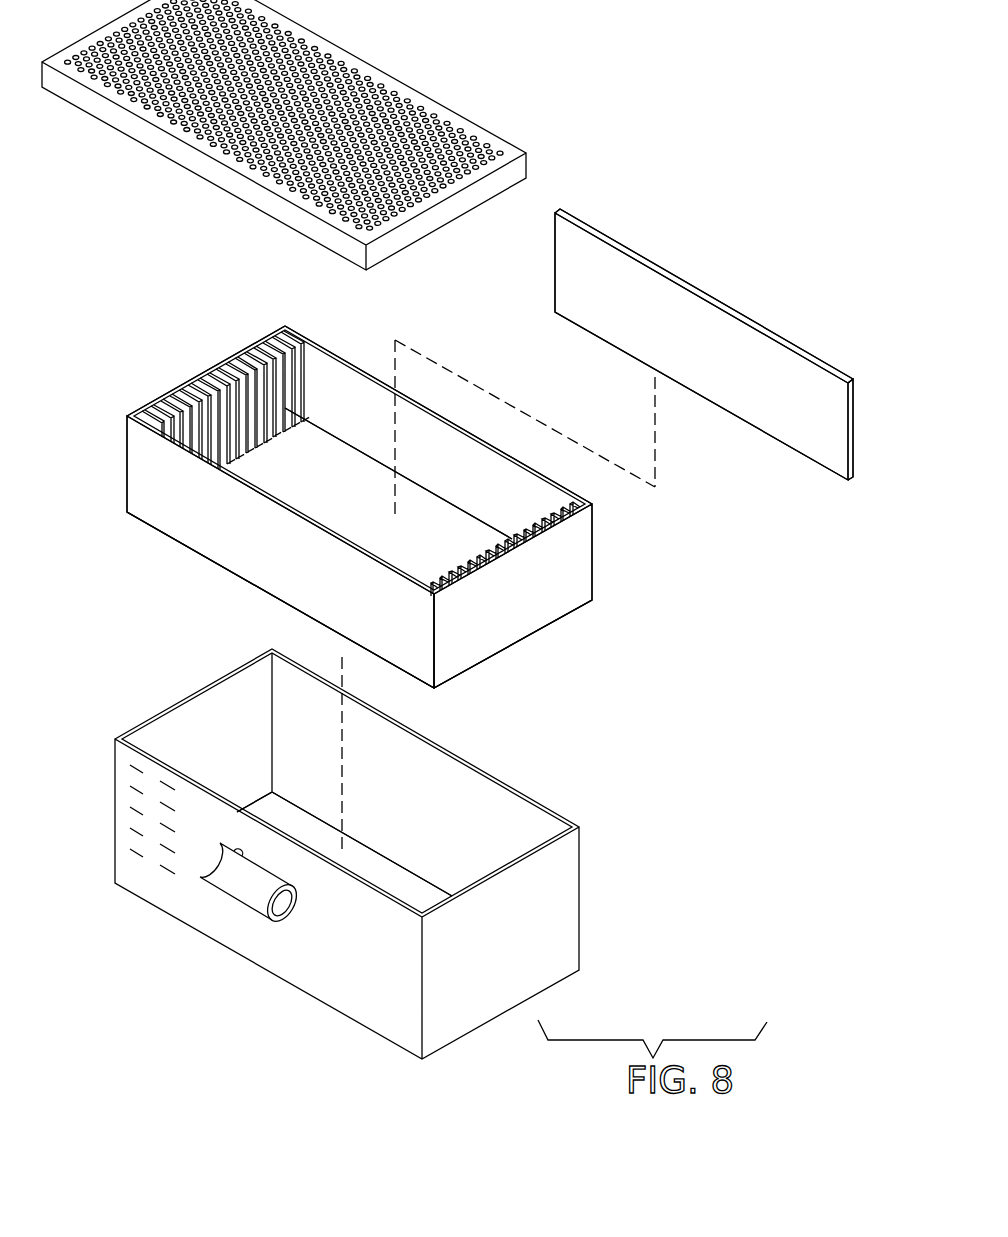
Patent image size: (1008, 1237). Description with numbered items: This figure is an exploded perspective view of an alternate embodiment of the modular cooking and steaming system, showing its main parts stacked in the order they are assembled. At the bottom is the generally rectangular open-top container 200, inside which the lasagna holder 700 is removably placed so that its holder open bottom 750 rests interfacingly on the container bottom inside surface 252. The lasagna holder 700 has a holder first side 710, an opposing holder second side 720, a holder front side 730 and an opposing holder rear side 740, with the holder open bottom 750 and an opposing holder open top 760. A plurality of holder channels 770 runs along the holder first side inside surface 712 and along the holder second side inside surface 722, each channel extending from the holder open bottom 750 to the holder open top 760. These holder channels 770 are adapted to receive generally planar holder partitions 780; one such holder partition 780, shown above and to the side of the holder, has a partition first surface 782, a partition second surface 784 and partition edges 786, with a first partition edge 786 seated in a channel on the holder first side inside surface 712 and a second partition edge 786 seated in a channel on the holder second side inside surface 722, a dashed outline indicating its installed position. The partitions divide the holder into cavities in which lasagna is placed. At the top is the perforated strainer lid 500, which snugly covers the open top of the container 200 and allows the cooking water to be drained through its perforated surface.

The strainer lid 500 is at (410, 90).
The lasagna holder 700 is at (381, 506).
The holder first side 710 is at (532, 603).
The holder first side inside surface 712 is at (498, 530).
The holder second side 720 is at (177, 388).
The holder second side inside surface 722 is at (212, 372).
The holder front side 730 is at (193, 515).
The holder rear side 740 is at (347, 357).
The holder open bottom 750 is at (480, 663).
The holder open top 760 is at (257, 468).
The holder channel 770 is at (225, 369).
The holder partition 780 is at (731, 358).
The partition first surface 782 is at (618, 277).
The partition second surface 784 is at (748, 317).
The partition edge 786 is at (852, 437).
The container 200 is at (364, 851).
The container bottom inside surface 252 is at (413, 887).